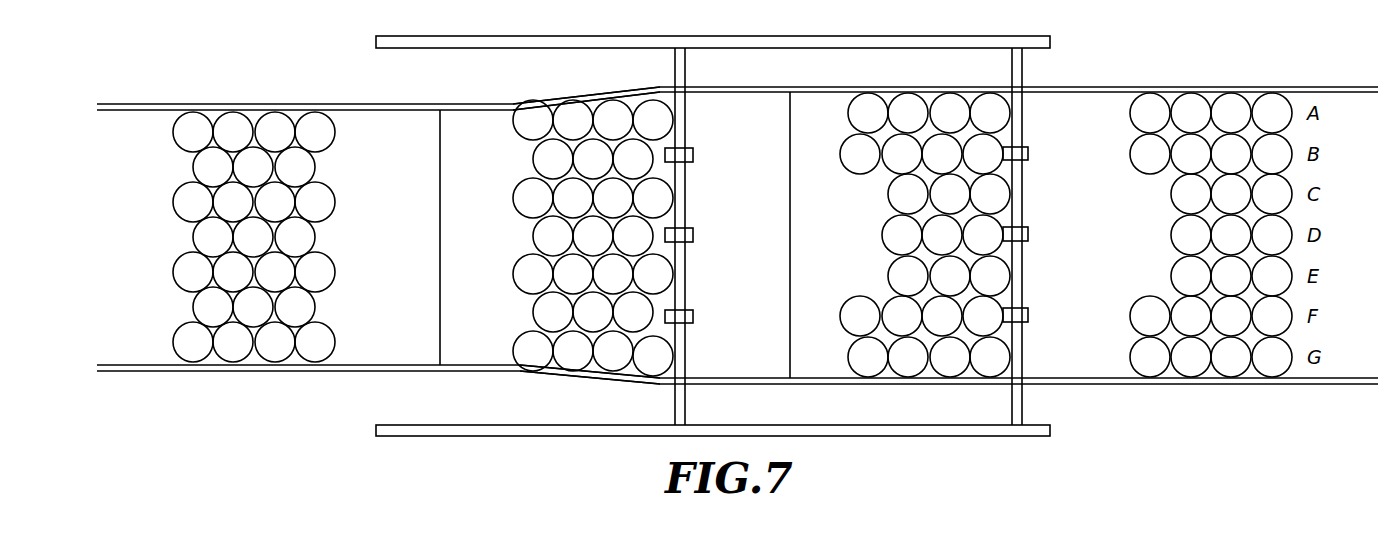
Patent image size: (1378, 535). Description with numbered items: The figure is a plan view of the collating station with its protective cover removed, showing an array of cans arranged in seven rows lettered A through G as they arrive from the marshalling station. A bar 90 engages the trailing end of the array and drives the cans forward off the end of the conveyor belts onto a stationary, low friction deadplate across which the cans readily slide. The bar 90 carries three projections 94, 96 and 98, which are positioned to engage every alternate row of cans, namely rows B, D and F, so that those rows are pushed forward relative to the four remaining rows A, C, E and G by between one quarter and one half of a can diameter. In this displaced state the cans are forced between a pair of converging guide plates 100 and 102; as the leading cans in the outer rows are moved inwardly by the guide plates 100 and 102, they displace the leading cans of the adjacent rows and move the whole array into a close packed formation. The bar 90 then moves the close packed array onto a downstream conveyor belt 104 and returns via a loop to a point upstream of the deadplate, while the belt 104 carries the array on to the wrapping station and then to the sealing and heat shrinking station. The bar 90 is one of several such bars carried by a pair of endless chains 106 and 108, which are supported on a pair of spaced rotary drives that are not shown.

The bar 90 is at (1022, 397).
The projection 94 is at (1028, 152).
The projection 96 is at (1028, 233).
The projection 98 is at (1028, 313).
The converging guide plate 100 is at (587, 92).
The converging guide plate 102 is at (593, 378).
The downstream conveyor belt 104 is at (148, 250).
The endless chain 106 is at (950, 436).
The endless chain 108 is at (885, 36).